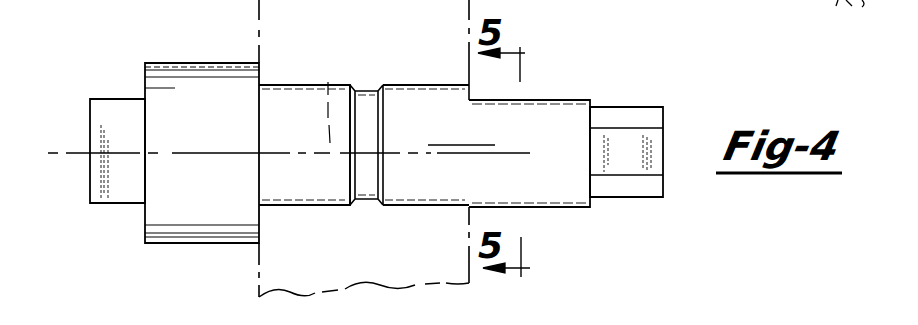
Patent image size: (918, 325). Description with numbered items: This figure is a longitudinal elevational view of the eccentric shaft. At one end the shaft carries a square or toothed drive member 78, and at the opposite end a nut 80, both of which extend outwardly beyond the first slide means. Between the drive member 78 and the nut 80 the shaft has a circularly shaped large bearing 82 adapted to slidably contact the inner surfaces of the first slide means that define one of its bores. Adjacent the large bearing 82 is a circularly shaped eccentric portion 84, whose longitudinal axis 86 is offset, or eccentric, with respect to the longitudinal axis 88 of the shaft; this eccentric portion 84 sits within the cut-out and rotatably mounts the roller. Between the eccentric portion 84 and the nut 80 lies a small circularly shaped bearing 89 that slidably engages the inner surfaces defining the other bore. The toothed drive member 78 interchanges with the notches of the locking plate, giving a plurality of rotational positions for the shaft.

The drive member 78 is at (112, 106).
The nut 80 is at (628, 135).
The large bearing 82 is at (210, 75).
The eccentric portion 84 is at (403, 95).
The longitudinal axis of eccentric portion 86 is at (325, 99).
The longitudinal axis of shaft 88 is at (328, 156).
The small bearing 89 is at (550, 113).